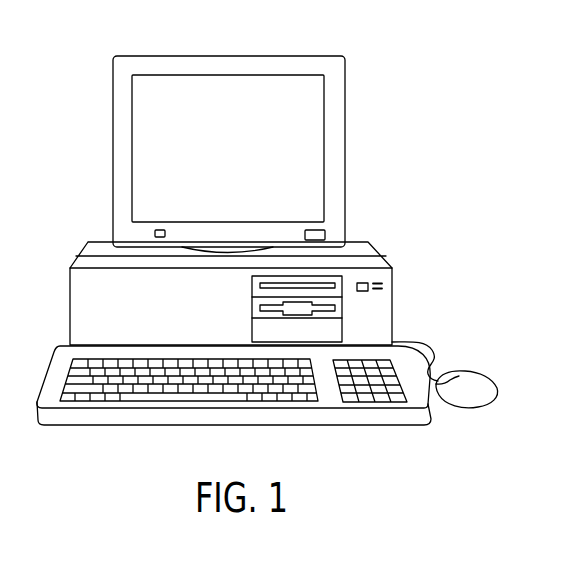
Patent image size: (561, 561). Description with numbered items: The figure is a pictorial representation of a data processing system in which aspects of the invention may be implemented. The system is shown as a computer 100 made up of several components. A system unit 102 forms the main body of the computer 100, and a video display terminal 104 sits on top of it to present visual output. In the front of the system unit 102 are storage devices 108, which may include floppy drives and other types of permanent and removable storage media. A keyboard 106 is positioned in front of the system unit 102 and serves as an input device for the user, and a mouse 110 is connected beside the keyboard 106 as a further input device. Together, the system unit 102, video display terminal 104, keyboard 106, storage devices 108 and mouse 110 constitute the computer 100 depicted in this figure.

The computer 100 is at (468, 164).
The system unit 102 is at (265, 293).
The video display terminal 104 is at (346, 106).
The keyboard 106 is at (350, 425).
The storage devices 108 is at (252, 311).
The mouse 110 is at (498, 388).